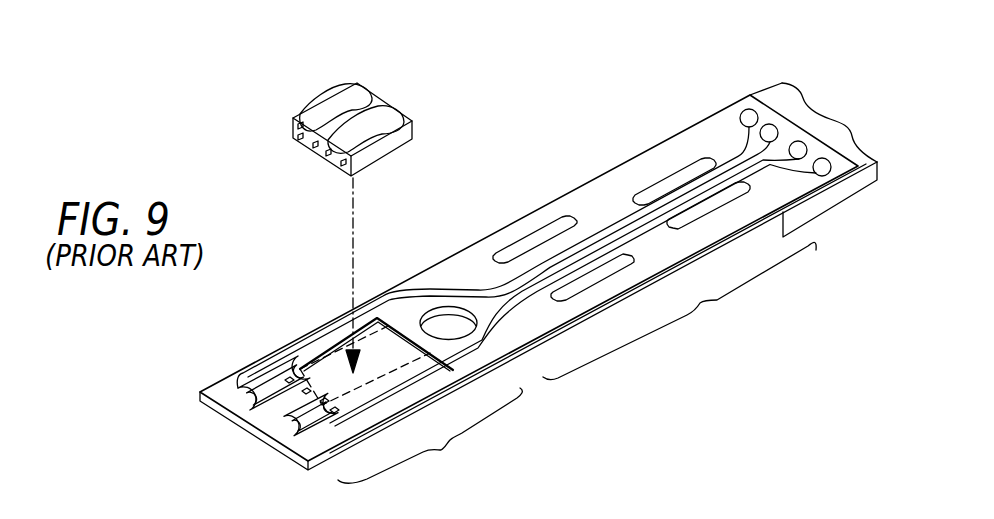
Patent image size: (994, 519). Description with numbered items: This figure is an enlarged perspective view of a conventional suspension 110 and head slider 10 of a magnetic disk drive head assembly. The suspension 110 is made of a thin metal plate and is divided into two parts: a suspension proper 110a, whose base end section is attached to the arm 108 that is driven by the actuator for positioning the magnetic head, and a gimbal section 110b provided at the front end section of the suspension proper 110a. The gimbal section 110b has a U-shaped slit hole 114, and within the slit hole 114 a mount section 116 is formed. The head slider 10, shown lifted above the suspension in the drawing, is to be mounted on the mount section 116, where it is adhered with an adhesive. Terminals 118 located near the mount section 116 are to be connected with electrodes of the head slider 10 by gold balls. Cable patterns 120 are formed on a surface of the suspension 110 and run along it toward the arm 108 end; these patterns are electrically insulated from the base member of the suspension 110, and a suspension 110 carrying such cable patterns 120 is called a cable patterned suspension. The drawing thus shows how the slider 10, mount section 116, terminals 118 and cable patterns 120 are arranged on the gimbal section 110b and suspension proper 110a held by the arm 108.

The head slider 10 is at (378, 102).
The arm 108 is at (831, 196).
The suspension 110 is at (572, 172).
The suspension proper 110a is at (679, 310).
The gimbal section 110b is at (430, 435).
The slit hole 114 is at (380, 340).
The mount section 116 is at (331, 384).
The terminals 118 is at (263, 357).
The cable patterns 120 is at (245, 412).